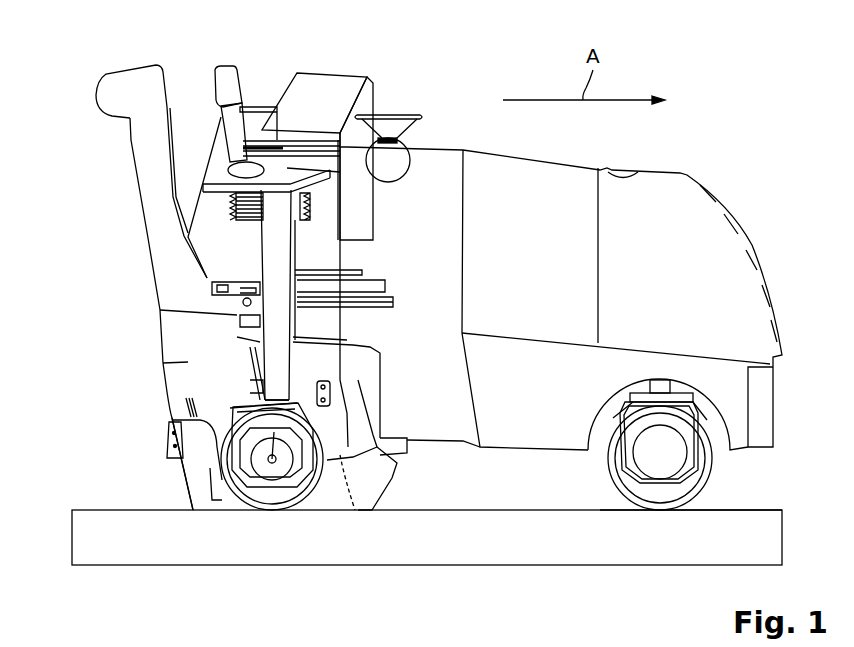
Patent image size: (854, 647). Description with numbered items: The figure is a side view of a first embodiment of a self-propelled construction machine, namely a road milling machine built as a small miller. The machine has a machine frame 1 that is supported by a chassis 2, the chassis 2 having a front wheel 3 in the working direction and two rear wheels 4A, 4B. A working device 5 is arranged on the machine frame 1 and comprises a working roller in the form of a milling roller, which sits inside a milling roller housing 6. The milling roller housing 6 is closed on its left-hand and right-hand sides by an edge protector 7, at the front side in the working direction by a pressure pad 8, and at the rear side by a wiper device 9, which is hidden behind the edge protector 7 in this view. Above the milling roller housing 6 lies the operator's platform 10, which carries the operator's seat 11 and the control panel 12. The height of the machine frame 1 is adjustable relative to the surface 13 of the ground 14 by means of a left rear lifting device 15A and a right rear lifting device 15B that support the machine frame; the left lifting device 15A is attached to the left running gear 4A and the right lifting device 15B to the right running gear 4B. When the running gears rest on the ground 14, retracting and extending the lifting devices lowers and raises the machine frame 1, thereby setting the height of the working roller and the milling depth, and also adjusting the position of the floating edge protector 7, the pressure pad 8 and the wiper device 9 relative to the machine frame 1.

The machine frame 1 is at (766, 237).
The chassis 2 is at (138, 376).
The front wheel 3 is at (657, 503).
The rear wheel 4A is at (267, 507).
The rear wheel 4B is at (272, 502).
The working device 5 is at (150, 447).
The milling roller housing 6 is at (210, 500).
The edge protector 7 is at (193, 470).
The pressure pad 8 is at (357, 490).
The wiper device 9 is at (178, 497).
The operator's platform 10 is at (259, 80).
The operator's seat 11 is at (225, 88).
The control panel 12 is at (327, 83).
The surface 13 is at (747, 510).
The ground 14 is at (583, 555).
The left rear lifting device 15A is at (277, 258).
The right rear lifting device 15B is at (162, 295).